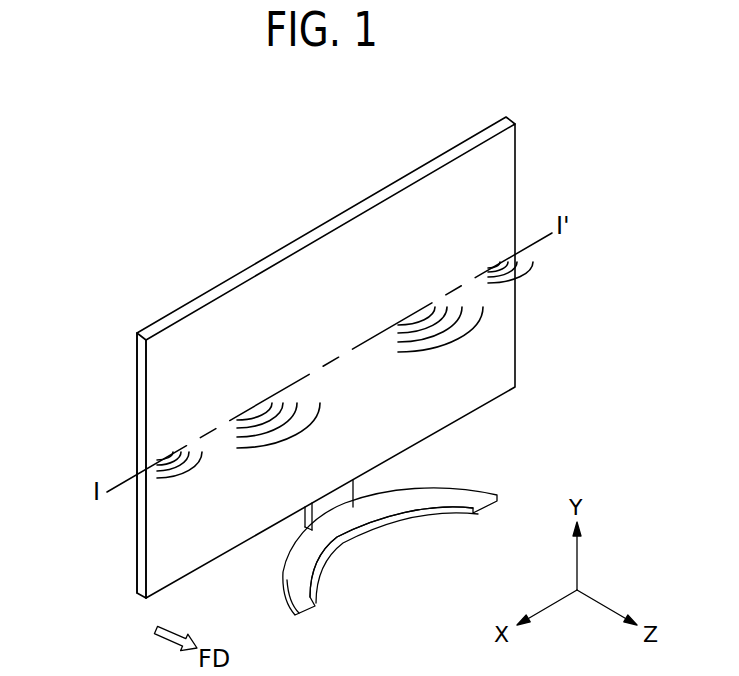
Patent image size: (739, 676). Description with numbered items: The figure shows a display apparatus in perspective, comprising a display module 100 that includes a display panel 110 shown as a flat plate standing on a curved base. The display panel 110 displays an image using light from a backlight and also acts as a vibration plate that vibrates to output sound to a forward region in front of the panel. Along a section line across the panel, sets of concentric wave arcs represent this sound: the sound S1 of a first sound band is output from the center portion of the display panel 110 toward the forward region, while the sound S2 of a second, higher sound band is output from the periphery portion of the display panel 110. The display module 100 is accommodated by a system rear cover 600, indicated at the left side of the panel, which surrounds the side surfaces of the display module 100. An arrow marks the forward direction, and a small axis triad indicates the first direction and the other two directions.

The display module 100 is at (393, 366).
The display panel 110 is at (508, 170).
The system rear cover 600 is at (142, 388).
The sound of a first sound band S1 is at (457, 348).
The sound of a second sound band S2 is at (181, 480).